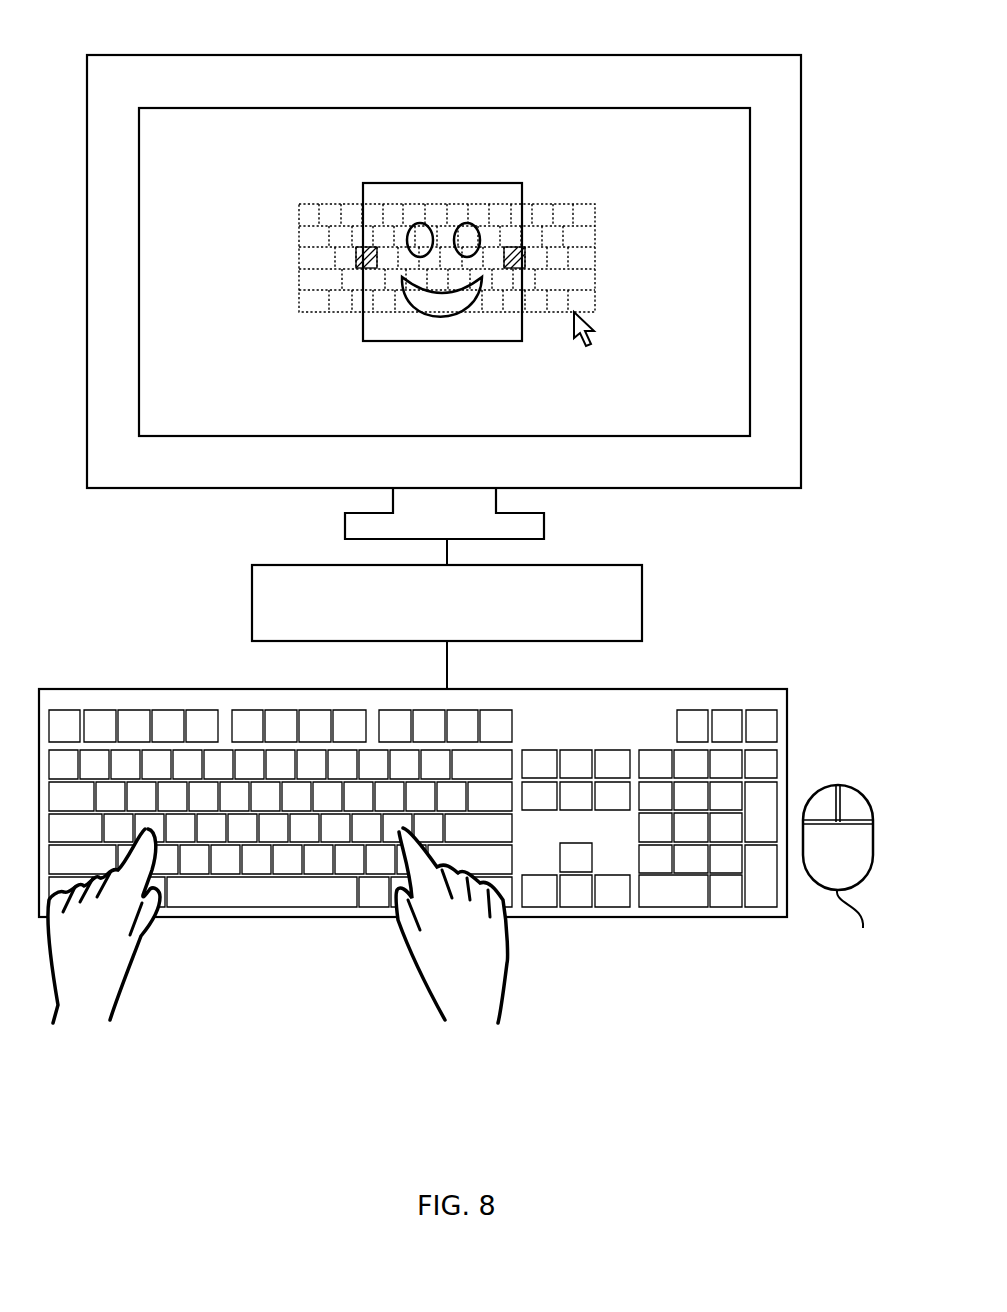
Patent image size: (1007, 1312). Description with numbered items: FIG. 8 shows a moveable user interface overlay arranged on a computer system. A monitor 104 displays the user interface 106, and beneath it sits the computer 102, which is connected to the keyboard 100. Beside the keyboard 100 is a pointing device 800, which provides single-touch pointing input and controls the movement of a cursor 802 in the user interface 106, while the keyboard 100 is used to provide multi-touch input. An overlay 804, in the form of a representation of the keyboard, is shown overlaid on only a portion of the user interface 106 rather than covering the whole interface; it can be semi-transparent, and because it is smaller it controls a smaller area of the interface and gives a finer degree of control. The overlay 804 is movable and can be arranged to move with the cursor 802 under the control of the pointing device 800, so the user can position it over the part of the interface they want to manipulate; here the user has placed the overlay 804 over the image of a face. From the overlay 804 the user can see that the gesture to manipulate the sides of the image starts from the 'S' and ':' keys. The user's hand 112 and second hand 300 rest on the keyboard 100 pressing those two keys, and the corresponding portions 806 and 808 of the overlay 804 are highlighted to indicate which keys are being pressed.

The keyboard 100 is at (752, 689).
The computer 102 is at (635, 563).
The monitor 104 is at (757, 53).
The user interface 106 is at (192, 133).
The hand 112 is at (503, 963).
The second hand 300 is at (127, 990).
The pointing device 800 is at (840, 870).
The cursor 802 is at (572, 333).
The overlay 804 is at (594, 213).
The highlighted portion of the overlay 806 is at (357, 270).
The highlighted portion of the overlay 808 is at (522, 257).